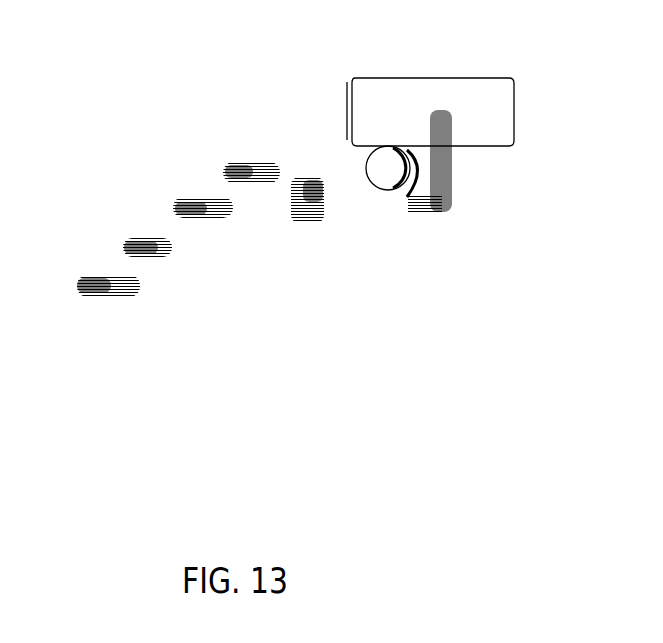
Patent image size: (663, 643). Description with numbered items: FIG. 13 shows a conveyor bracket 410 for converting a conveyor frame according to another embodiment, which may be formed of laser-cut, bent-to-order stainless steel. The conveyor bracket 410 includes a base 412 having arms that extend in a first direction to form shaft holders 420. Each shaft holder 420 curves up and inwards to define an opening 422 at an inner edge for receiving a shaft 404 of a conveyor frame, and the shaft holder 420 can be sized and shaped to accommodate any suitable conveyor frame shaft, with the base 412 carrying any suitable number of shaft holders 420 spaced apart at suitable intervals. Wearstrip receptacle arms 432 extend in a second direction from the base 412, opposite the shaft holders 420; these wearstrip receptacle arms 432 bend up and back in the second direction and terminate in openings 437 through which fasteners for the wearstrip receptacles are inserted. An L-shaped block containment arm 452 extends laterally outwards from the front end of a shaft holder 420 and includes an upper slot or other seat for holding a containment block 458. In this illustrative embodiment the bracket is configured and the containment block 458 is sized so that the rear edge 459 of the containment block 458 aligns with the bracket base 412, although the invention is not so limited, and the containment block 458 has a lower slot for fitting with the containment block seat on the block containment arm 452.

The shaft 404 is at (122, 355).
The conveyor bracket 410 is at (207, 122).
The base 412 is at (227, 237).
The shaft holder 420 is at (378, 205).
The opening 422 is at (210, 305).
The wearstrip receptacle arm 432 is at (285, 165).
The opening 437 is at (145, 258).
The L-shaped block containment arm 452 is at (443, 207).
The containment block 458 is at (478, 90).
The rear edge 459 is at (345, 91).